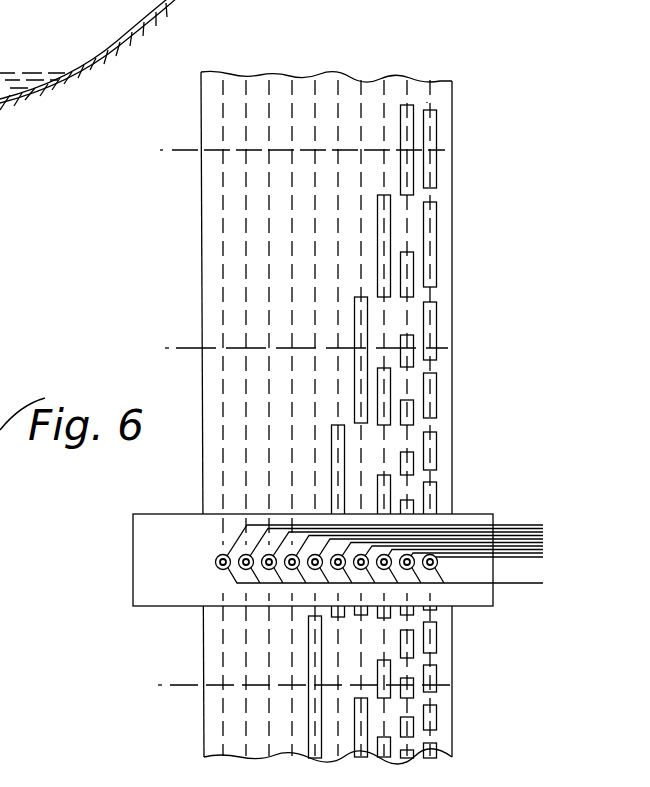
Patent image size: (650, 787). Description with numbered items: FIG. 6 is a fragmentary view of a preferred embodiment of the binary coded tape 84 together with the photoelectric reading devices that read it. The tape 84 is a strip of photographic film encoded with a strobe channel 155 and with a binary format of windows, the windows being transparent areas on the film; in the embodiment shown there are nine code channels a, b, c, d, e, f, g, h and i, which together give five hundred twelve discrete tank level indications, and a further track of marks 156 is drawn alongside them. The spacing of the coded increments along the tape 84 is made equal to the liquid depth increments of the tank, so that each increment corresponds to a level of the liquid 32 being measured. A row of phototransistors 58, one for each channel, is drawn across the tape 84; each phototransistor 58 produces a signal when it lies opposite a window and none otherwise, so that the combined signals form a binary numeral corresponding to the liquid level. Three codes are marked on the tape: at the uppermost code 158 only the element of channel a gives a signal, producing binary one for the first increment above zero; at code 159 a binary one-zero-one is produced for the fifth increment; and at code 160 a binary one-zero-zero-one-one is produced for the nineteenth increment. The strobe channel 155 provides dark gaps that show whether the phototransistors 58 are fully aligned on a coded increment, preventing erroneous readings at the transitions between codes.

The liquid level in tank 32 is at (13, 72).
The binary coded tape 84 is at (199, 251).
The strobe channel 155 is at (427, 102).
The recorded marks 156 is at (405, 165).
The uppermost code 158 is at (275, 151).
The code 159 is at (280, 349).
The code 160 is at (279, 686).
The phototransistors 58 is at (215, 562).
The channel a is at (408, 92).
The channel b is at (386, 114).
The channel c is at (361, 86).
The channel d is at (337, 106).
The channel e is at (314, 97).
The channel f is at (292, 110).
The channel g is at (268, 93).
The channel h is at (245, 102).
The channel i is at (222, 84).